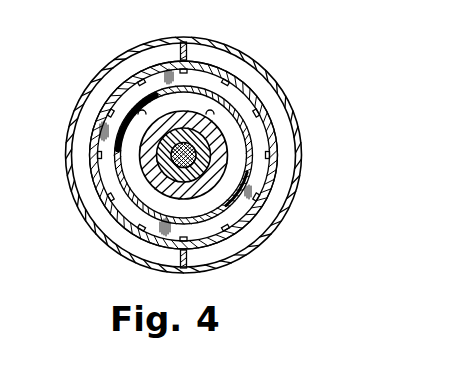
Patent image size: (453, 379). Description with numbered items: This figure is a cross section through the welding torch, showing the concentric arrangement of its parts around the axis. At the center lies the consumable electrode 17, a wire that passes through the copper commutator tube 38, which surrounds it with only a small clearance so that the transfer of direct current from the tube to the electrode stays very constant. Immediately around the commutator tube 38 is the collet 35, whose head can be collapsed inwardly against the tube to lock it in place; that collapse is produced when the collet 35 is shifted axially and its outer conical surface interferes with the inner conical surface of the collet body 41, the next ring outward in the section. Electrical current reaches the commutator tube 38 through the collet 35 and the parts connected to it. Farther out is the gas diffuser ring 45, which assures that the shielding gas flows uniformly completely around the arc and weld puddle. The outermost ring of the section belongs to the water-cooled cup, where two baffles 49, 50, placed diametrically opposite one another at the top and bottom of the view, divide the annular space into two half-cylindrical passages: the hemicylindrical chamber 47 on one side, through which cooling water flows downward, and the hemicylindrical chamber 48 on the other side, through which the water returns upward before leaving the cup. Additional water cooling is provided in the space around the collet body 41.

The consumable electrode 17 is at (195, 138).
The collet 35 is at (162, 173).
The copper commutator tube 38 is at (192, 145).
The collet body 41 is at (200, 173).
The gas diffuser ring 45 is at (250, 137).
The hemicylindrical chamber 47 is at (85, 180).
The hemicylindrical chamber 48 is at (270, 218).
The baffle 49 is at (188, 50).
The baffle 50 is at (190, 258).